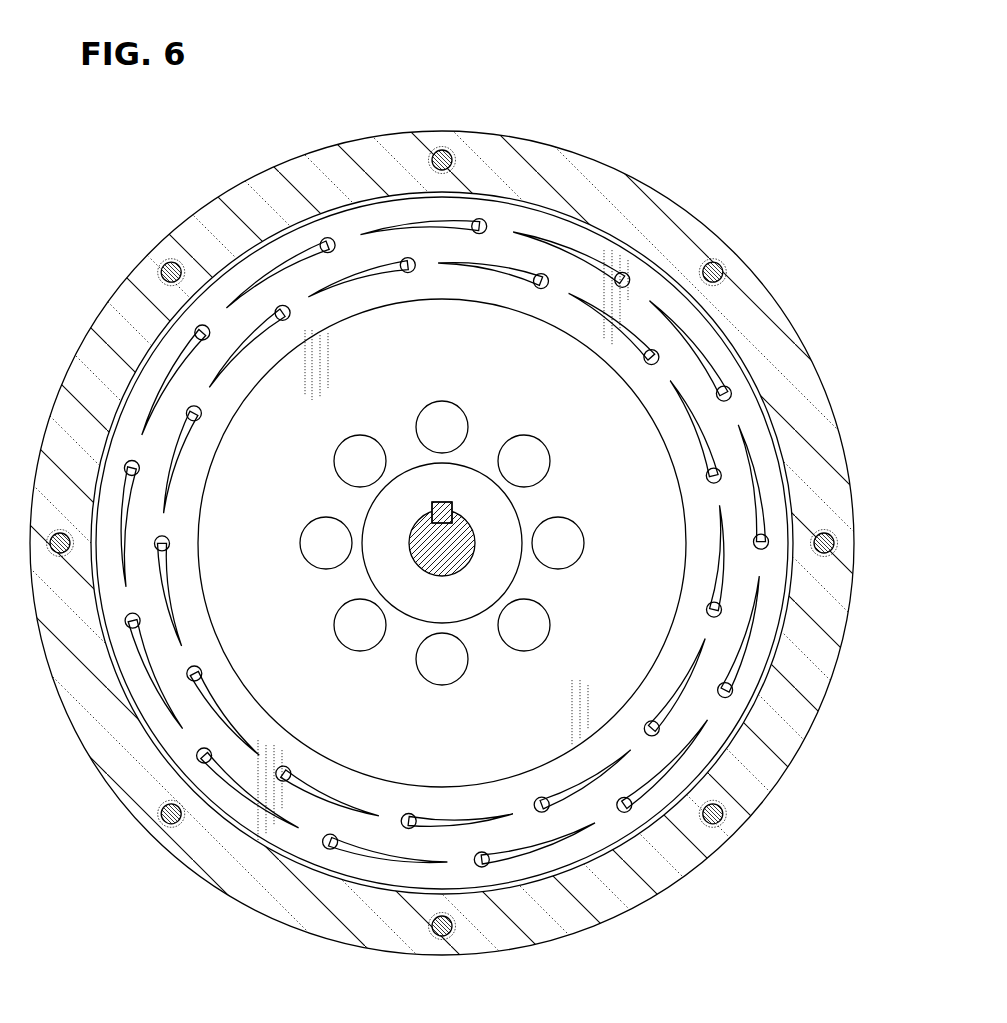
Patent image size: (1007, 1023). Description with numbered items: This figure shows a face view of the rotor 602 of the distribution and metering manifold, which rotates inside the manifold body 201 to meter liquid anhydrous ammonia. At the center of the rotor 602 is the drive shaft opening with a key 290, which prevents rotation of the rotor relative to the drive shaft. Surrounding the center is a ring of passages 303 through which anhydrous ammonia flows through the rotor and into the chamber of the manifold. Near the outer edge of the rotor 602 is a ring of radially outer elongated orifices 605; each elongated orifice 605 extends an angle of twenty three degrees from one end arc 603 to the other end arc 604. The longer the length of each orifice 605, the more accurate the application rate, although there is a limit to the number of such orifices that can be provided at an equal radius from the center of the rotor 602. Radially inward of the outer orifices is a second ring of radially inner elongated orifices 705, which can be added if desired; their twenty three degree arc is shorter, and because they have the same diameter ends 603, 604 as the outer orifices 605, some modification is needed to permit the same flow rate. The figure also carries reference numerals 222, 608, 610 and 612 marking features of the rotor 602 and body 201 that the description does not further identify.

The body 201 is at (442, 543).
The inner edge of outer ring 222 is at (719, 328).
The key 290 is at (442, 503).
The passages 303 is at (300, 549).
The rotor 602 is at (242, 273).
The end arc 603 is at (706, 720).
The end arc 604 is at (619, 812).
The elongated orifices 605 is at (168, 384).
The ring inner boundary 608 is at (182, 317).
The slot rounded end 610 is at (147, 646).
The slot body 612 is at (150, 676).
The radially inner elongated orifices 705 is at (172, 448).